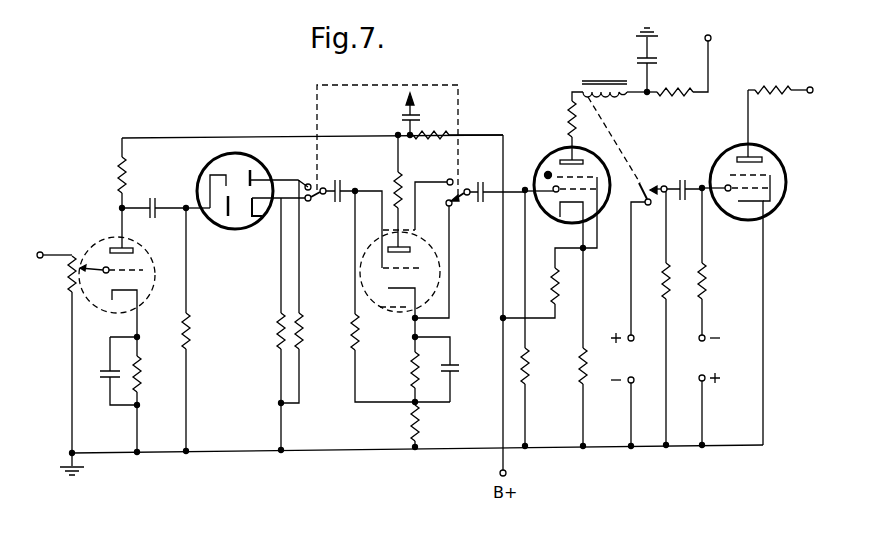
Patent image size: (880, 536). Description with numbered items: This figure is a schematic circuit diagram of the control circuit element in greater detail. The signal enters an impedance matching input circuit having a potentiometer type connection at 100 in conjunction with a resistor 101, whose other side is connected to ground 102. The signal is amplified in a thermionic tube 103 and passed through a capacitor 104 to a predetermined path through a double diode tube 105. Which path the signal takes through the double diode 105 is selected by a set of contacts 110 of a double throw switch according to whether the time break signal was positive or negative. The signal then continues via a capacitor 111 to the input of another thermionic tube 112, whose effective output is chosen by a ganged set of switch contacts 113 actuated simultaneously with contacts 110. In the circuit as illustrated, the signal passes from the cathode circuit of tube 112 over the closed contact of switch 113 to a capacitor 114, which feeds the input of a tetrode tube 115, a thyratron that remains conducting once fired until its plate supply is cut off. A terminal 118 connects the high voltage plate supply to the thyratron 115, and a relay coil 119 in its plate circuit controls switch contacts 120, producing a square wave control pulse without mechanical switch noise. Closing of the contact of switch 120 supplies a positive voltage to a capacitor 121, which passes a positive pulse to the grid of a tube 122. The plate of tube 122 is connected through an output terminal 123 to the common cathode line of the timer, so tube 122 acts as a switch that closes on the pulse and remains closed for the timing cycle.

The input connection 100 is at (42, 252).
The resistor 101 is at (70, 291).
The ground 102 is at (70, 468).
The thermionic tube 103 is at (100, 302).
The capacitor 104 is at (154, 195).
The double diode tube 105 is at (236, 229).
The set of contacts of double throw switch 110 is at (310, 204).
The capacitor 111 is at (337, 178).
The thermionic tube 112 is at (434, 290).
The ganged set of switch contacts 113 is at (459, 200).
The capacitor 114 is at (480, 181).
The tetrode tube (thyratron) 115 is at (556, 210).
The terminal 118 is at (705, 39).
The relay coil 119 is at (590, 82).
The switch contacts 120 is at (645, 180).
The capacitor 121 is at (684, 178).
The tube 122 is at (770, 166).
The output terminal 123 is at (810, 86).